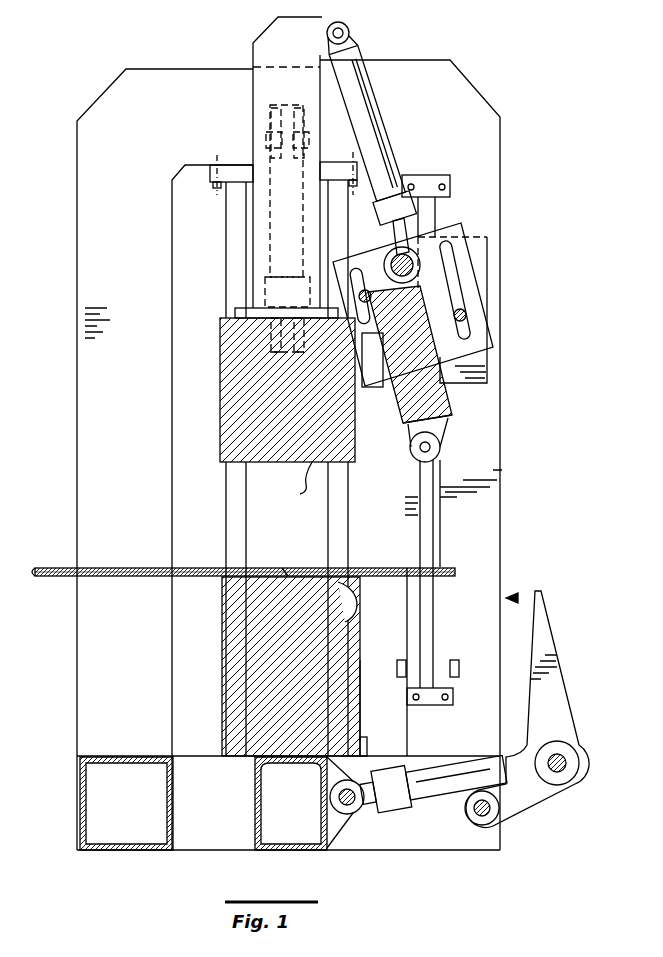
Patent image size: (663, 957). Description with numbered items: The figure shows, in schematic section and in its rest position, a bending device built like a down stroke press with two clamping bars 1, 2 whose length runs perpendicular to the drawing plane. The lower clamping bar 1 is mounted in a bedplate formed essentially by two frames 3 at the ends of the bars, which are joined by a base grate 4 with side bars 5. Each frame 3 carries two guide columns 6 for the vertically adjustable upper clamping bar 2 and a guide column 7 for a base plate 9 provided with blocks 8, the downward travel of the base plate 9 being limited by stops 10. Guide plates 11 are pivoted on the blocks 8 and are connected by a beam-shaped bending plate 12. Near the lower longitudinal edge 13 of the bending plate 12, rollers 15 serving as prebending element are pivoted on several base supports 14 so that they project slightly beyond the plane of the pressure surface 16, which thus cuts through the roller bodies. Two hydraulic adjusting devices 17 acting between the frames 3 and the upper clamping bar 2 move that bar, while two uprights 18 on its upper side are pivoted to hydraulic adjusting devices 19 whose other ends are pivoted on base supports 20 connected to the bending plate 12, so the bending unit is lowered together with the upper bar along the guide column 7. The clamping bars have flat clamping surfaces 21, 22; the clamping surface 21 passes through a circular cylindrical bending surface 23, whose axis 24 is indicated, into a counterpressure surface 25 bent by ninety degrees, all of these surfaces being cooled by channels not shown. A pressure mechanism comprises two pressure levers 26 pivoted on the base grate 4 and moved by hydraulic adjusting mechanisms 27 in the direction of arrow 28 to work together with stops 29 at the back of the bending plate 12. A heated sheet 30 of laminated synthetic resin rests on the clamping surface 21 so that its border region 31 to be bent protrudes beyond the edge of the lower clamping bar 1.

The lower clamping bar 1 is at (234, 713).
The upper clamping bar 2 is at (232, 413).
The frame 3 is at (96, 413).
The base grate 4 is at (392, 839).
The side bar 5 is at (137, 853).
The guide column 6 is at (228, 544).
The guide column 7 is at (430, 533).
The block 8 is at (362, 287).
The base plate 9 is at (480, 245).
The stop 10 is at (406, 668).
The guide plate 11 is at (489, 362).
The bending plate 12 is at (457, 395).
The lower longitudinal edge 13 is at (410, 429).
The base support 14 is at (449, 424).
The roller 15 is at (440, 450).
The pressure surface 16 is at (406, 419).
The hydraulic adjusting device 17 is at (268, 238).
The upright 18 is at (264, 98).
The hydraulic adjusting device 19 is at (367, 110).
The base support 20 is at (420, 274).
The clamping surface 21 is at (284, 567).
The clamping surface 22 is at (295, 483).
The bending surface 23 is at (346, 588).
The axis 24 is at (346, 621).
The counterpressure surface 25 is at (362, 694).
The pressure lever 26 is at (553, 708).
The hydraulic adjusting mechanism 27 is at (440, 782).
The arrow 28 is at (516, 598).
The stop 29 is at (447, 328).
The sheet 30 is at (125, 558).
The border region 31 is at (377, 567).